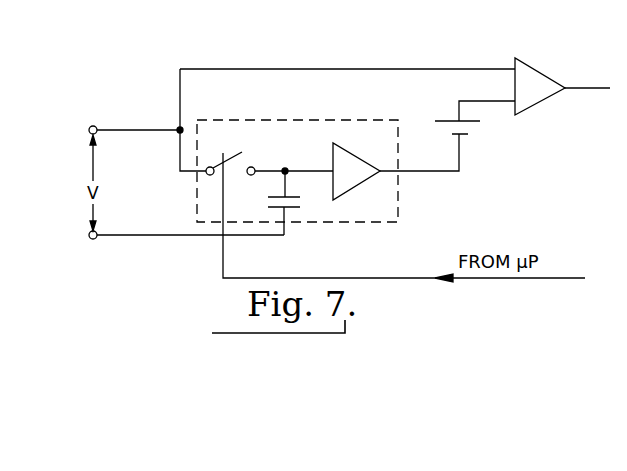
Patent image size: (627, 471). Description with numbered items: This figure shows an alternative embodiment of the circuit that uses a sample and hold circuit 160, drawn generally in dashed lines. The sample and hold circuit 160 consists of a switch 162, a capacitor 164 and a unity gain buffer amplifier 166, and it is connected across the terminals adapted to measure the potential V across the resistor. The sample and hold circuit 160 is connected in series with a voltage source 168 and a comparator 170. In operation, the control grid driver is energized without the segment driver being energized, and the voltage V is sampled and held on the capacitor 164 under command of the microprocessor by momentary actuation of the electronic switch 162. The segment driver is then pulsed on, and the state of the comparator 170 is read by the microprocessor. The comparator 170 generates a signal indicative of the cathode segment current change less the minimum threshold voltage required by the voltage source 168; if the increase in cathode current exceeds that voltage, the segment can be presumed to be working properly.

The sample and hold circuit 160 is at (325, 233).
The switch 162 is at (232, 160).
The capacitor 164 is at (308, 205).
The unity gain buffer amplifier 166 is at (372, 158).
The voltage source 168 is at (470, 127).
The comparator 170 is at (540, 72).